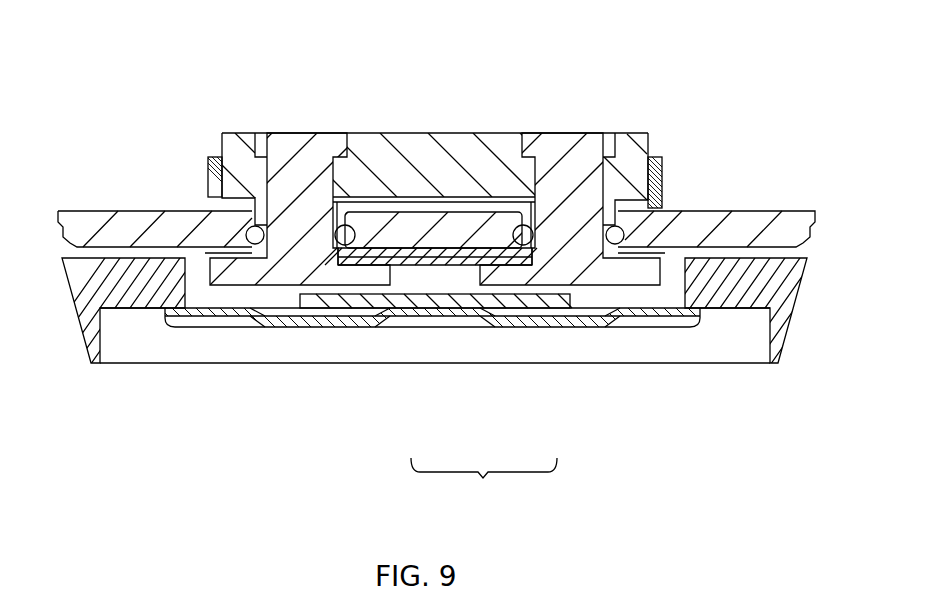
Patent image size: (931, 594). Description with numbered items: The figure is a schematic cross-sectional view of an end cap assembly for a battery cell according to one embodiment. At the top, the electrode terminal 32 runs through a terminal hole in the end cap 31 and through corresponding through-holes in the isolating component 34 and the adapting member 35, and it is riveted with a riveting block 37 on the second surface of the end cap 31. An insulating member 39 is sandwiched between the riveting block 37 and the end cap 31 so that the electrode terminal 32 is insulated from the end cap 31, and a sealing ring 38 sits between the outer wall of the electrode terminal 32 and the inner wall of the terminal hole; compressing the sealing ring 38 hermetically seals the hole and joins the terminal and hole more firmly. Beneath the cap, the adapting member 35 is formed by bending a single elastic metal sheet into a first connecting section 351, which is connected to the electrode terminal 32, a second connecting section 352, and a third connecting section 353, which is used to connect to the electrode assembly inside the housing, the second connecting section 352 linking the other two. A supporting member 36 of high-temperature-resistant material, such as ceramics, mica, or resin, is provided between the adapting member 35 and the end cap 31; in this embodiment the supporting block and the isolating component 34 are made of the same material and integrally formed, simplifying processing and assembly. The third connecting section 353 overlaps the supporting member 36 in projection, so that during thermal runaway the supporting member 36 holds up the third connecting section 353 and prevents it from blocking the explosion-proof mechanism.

The end cap 31 is at (700, 232).
The electrode terminal 32 is at (572, 160).
The isolating component 34 is at (752, 256).
The adapting member 35 is at (484, 491).
The first connecting section 351 is at (409, 268).
The second connecting section 352 is at (466, 296).
The third connecting section 353 is at (548, 320).
The supporting member 36 is at (719, 330).
The riveting block 37 is at (421, 166).
The sealing ring 38 is at (623, 197).
The insulating member 39 is at (485, 203).